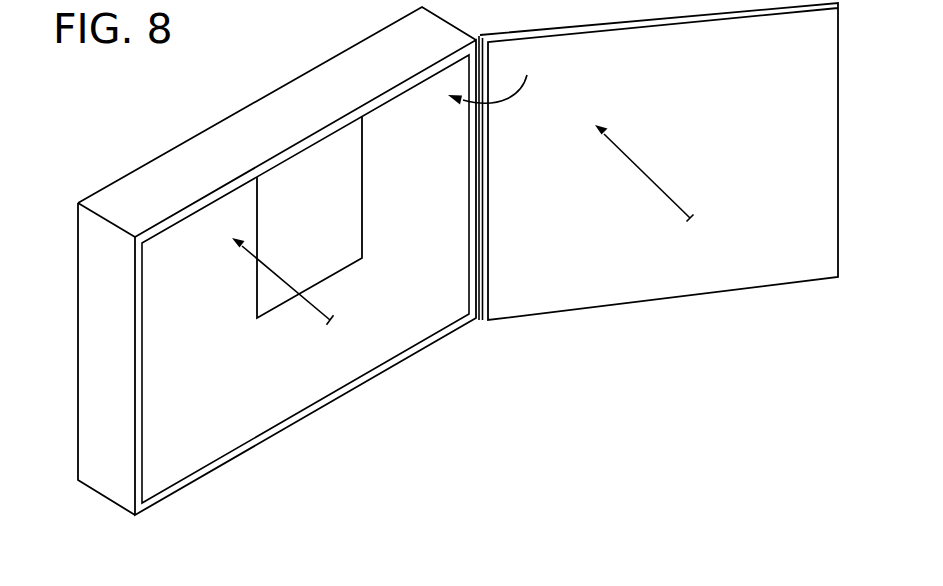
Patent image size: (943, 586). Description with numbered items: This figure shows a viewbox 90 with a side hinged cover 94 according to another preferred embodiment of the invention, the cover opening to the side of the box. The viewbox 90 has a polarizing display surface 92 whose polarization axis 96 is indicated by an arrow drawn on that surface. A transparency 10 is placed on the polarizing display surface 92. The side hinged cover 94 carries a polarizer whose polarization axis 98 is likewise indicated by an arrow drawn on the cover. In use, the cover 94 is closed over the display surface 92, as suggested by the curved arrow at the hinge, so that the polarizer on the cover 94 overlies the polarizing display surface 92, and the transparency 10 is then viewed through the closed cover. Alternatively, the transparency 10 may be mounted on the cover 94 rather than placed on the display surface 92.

The transparency 10 is at (313, 133).
The viewbox 90 is at (80, 511).
The polarizing display surface 92 is at (255, 443).
The side hinged cover 94 is at (723, 290).
The polarization axis 96 is at (315, 310).
The polarization axis 98 is at (660, 193).